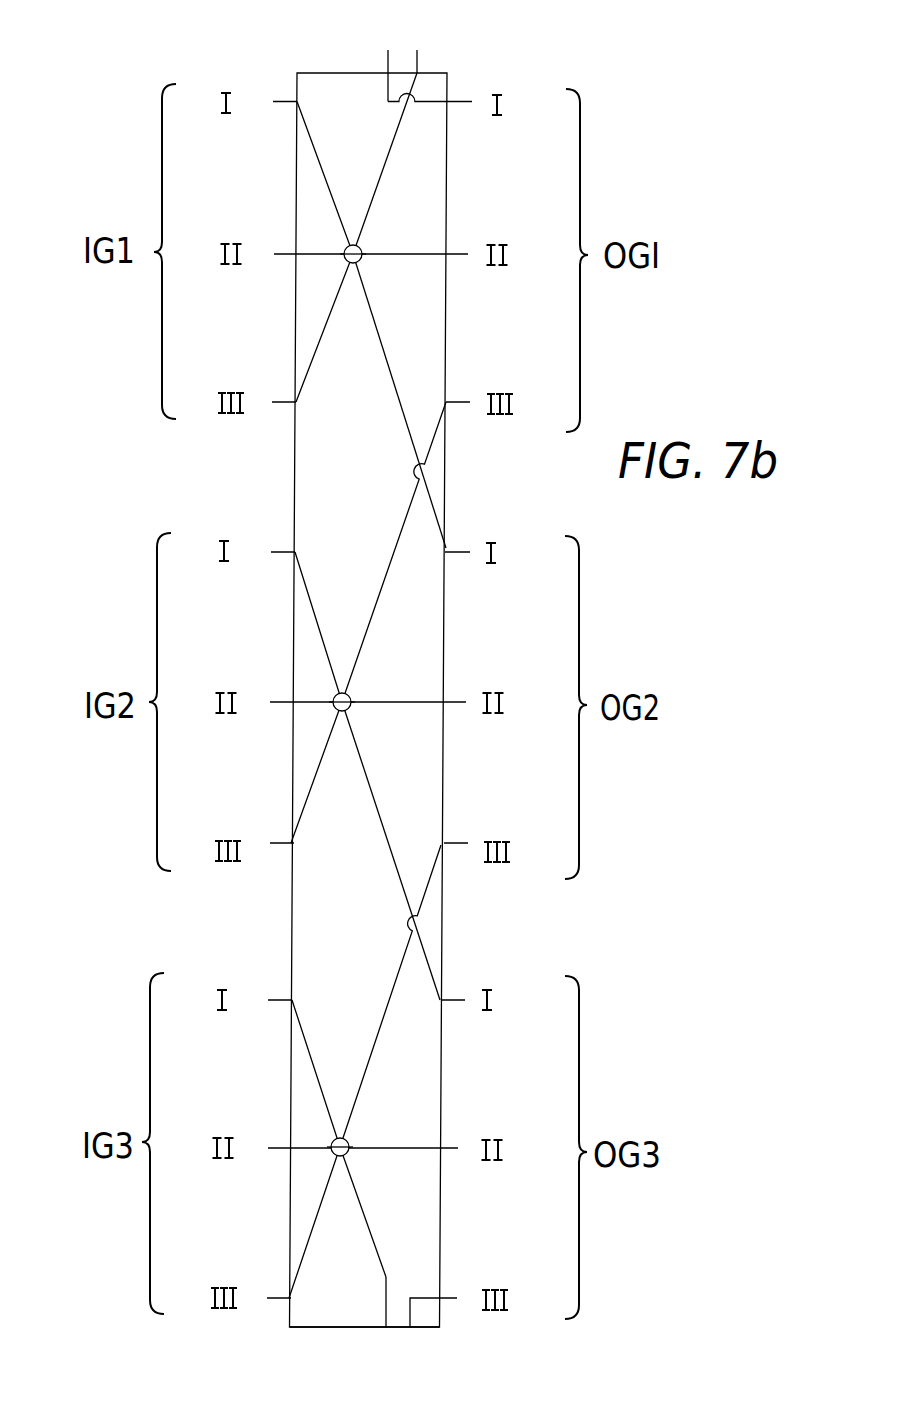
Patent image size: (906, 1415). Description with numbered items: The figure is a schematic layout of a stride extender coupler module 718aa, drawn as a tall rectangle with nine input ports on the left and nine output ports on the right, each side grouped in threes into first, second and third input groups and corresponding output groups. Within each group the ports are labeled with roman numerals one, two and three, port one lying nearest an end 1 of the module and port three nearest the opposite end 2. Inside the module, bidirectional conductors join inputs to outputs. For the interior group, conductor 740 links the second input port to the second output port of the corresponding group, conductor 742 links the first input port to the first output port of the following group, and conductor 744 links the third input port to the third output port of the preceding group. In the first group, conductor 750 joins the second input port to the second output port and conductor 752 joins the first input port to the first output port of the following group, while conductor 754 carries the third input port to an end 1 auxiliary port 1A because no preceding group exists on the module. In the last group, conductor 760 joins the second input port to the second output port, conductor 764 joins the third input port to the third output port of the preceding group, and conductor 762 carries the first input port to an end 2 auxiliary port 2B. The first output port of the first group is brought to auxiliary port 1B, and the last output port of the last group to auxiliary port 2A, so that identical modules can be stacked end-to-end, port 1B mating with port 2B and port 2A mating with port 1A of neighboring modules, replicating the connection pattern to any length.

The stride extender coupler module 718aa is at (180, 53).
The end of the module 1 is at (342, 72).
The end 1 auxiliary port 1A is at (419, 58).
The auxiliary port 1B is at (390, 56).
The opposite end of the module 2 is at (312, 1328).
The auxiliary port 2A is at (410, 1330).
The end 2 auxiliary port 2B is at (386, 1330).
The conductor 740 is at (400, 701).
The conductor 742 is at (375, 798).
The conductor 744 is at (390, 566).
The conductor 750 is at (383, 253).
The conductor 752 is at (385, 362).
The conductor 754 is at (378, 183).
The conductor 760 is at (397, 1147).
The conductor 762 is at (372, 1234).
The conductor 764 is at (384, 1013).